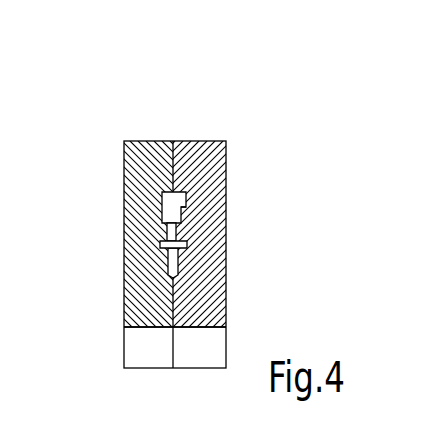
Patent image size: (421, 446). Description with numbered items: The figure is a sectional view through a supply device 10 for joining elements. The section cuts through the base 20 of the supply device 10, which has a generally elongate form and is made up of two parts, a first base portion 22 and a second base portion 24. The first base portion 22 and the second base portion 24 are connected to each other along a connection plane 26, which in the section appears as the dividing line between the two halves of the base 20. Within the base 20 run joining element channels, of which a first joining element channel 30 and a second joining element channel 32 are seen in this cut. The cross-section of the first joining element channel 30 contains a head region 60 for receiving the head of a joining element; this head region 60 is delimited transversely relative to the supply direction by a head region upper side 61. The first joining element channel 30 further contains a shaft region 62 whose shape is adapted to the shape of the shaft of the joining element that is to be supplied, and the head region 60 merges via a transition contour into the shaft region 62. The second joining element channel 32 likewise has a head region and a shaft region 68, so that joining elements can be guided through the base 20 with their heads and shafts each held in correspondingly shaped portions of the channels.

The supply device 10 is at (253, 128).
The base 20 is at (207, 143).
The first base portion 22 is at (167, 272).
The second base portion 24 is at (205, 302).
The connection plane 26 is at (186, 337).
The first joining element channel 30 is at (162, 200).
The second joining element channel 32 is at (168, 246).
The head region 60 is at (186, 193).
The head region upper side 61 is at (167, 191).
The shaft region 62 is at (183, 212).
The shaft region 68 is at (137, 312).